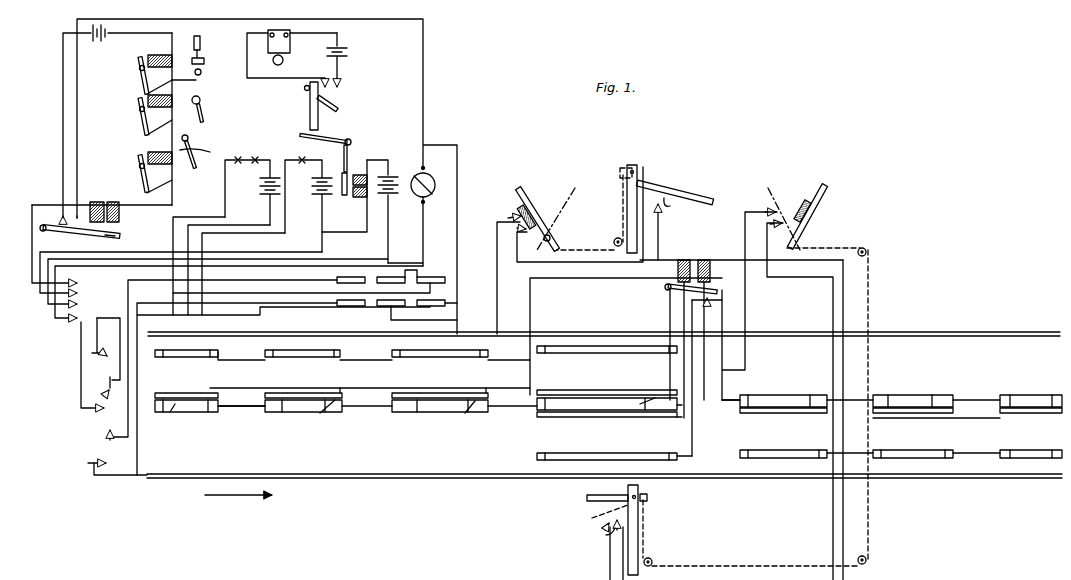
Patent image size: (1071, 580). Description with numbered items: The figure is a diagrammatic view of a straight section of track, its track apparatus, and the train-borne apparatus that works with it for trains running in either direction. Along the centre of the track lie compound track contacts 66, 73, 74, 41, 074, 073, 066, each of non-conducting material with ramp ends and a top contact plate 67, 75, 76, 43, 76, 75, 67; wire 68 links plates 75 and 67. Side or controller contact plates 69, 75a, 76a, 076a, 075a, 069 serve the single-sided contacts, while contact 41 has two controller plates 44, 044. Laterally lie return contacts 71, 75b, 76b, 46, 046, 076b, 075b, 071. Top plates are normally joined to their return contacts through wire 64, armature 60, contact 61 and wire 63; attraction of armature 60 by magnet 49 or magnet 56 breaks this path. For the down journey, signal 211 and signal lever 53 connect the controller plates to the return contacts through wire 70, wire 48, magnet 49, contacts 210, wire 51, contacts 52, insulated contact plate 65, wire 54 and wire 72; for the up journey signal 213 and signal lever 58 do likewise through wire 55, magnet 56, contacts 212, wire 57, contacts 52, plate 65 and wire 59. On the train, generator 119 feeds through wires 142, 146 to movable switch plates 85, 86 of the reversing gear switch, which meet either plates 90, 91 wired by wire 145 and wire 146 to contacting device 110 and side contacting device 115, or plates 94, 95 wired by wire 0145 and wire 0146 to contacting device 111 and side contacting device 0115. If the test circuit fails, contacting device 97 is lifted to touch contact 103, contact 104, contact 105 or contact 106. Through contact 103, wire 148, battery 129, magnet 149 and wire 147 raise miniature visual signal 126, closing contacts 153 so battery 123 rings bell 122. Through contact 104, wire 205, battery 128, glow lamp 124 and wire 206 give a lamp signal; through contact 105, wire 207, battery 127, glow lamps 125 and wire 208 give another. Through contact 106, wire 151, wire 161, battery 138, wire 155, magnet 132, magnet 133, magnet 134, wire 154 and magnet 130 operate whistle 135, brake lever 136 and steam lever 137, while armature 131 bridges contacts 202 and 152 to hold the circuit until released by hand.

The compound track contact 41 is at (609, 391).
The top contact plate 43 is at (644, 398).
The side controller contact plate 44 is at (583, 392).
The return contact 46 is at (590, 354).
The wire 48 is at (531, 300).
The magnet 49 is at (682, 259).
The wire 51 is at (578, 263).
The contacts 52 is at (515, 218).
The signal lever 53 is at (525, 192).
The wire 54 is at (496, 256).
The wire 55 is at (722, 384).
The magnet 56 is at (706, 259).
The wire 57 is at (790, 288).
The signal lever 58 is at (818, 190).
The wire 59 is at (756, 208).
The armature 60 is at (700, 293).
The contact 61 is at (701, 308).
The wire 63 is at (711, 353).
The wire 64 is at (669, 310).
The insulated contact plate 65 is at (522, 210).
The compound track contact 66 is at (210, 418).
The top contact plate 67 is at (176, 413).
The wire 68 is at (256, 413).
The side controller contact plate 69 is at (186, 388).
The wire 70 is at (258, 392).
The return contact 71 is at (205, 357).
The wire 72 is at (256, 362).
The compound track contact 73 is at (328, 418).
The compound track contact 74 is at (464, 418).
The top contact plate 75 is at (336, 414).
The side controller contact plate 75a is at (292, 394).
The return contact 75b is at (342, 353).
The top contact plate 76 is at (466, 414).
The side controller contact plate 76a is at (478, 394).
The return contact 76b is at (435, 360).
The contact plate 85 is at (397, 277).
The contact plate 86 is at (396, 312).
The contact plate 90 is at (432, 278).
The contact plate 91 is at (440, 302).
The contact plate 94 is at (370, 277).
The contact plate 95 is at (370, 311).
The contacting device 97 is at (103, 410).
The contact 103 is at (76, 321).
The contact 104 is at (90, 305).
The contact 105 is at (90, 289).
The contact 106 is at (90, 274).
The contacting device 110 is at (97, 390).
The contacting device 111 is at (106, 428).
The side contacting device 115 is at (100, 347).
The generator of electricity 119 is at (395, 211).
The bell 122 is at (284, 61).
The battery 123 is at (348, 53).
The glow lamp 124 is at (298, 157).
The glow lamps 125 is at (254, 155).
The miniature visual signal 126 is at (338, 112).
The battery 127 is at (252, 192).
The battery 128 is at (308, 206).
The battery 129 is at (404, 172).
The magnet 130 is at (104, 203).
The armature 131 is at (116, 236).
The magnet 132 is at (157, 55).
The magnet 133 is at (148, 93).
The magnet 134 is at (148, 150).
The whistle 135 is at (200, 44).
The lever 136 is at (202, 104).
The lever 137 is at (192, 138).
The battery 138 is at (124, 44).
The wire 142 is at (422, 242).
The wire 145 is at (235, 281).
The wire 146 is at (77, 126).
The wire 147 is at (365, 230).
The wire 148 is at (385, 262).
The magnet 149 is at (356, 198).
The wire 151 is at (45, 200).
The contact 152 is at (81, 233).
The contacts 153 is at (340, 92).
The wire 154 is at (183, 85).
The wire 155 is at (150, 34).
The wire 161 is at (62, 110).
The contact 202 is at (45, 237).
The wire 205 is at (312, 252).
The wire 206 is at (250, 224).
The wire 207 is at (250, 246).
The wire 208 is at (199, 259).
The contacts 210 is at (669, 208).
The signal 211 is at (650, 190).
The contacts 212 is at (607, 533).
The signal 213 is at (598, 498).
The side contacting device 0115 is at (105, 464).
The wire 0145 is at (282, 281).
The wire 0146 is at (258, 316).
The side controller contact plate 044 is at (616, 418).
The return contact 046 is at (612, 455).
The compound track contact 066 is at (1031, 387).
The side controller contact plate 069 is at (1052, 414).
The return contact 071 is at (1035, 451).
The compound track contact 073 is at (936, 387).
The compound track contact 074 is at (797, 387).
The side controller contact plate 075a is at (920, 414).
The return contact 075b is at (905, 455).
The side controller contact plate 076a is at (782, 414).
The return contact 076b is at (778, 455).